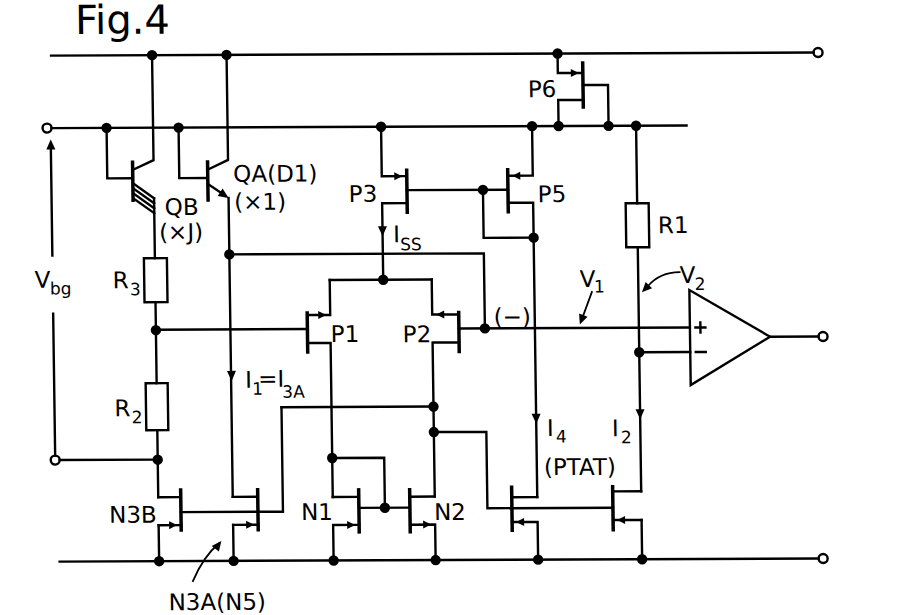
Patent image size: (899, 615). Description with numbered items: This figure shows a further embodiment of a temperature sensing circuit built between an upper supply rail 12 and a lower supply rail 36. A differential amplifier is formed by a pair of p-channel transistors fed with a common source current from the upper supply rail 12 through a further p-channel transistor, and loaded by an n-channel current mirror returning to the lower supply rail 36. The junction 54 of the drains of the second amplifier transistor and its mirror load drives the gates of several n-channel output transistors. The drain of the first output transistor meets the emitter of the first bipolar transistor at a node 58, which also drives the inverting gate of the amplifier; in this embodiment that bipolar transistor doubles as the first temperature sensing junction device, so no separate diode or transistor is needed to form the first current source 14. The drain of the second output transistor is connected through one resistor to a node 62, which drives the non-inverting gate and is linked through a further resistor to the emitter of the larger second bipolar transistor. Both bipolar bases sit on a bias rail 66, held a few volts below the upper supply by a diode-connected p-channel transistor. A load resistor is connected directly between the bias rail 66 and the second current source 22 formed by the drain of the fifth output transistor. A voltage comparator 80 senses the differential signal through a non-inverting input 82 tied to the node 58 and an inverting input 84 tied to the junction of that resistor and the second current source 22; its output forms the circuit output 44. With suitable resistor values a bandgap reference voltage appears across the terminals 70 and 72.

The supply rail 12 is at (766, 56).
The bias rail 66 is at (432, 124).
The output terminal 70 is at (47, 122).
The output terminal 72 is at (55, 464).
The node 62 is at (152, 329).
The node 58 is at (233, 252).
The junction 54 is at (434, 387).
The first current source 14 is at (504, 542).
The second current source 22 is at (612, 536).
The voltage comparator 80 is at (733, 309).
The non-inverting input 82 is at (655, 329).
The inverting input 84 is at (666, 355).
The output 44 is at (788, 334).
The supply rail 36 is at (749, 554).